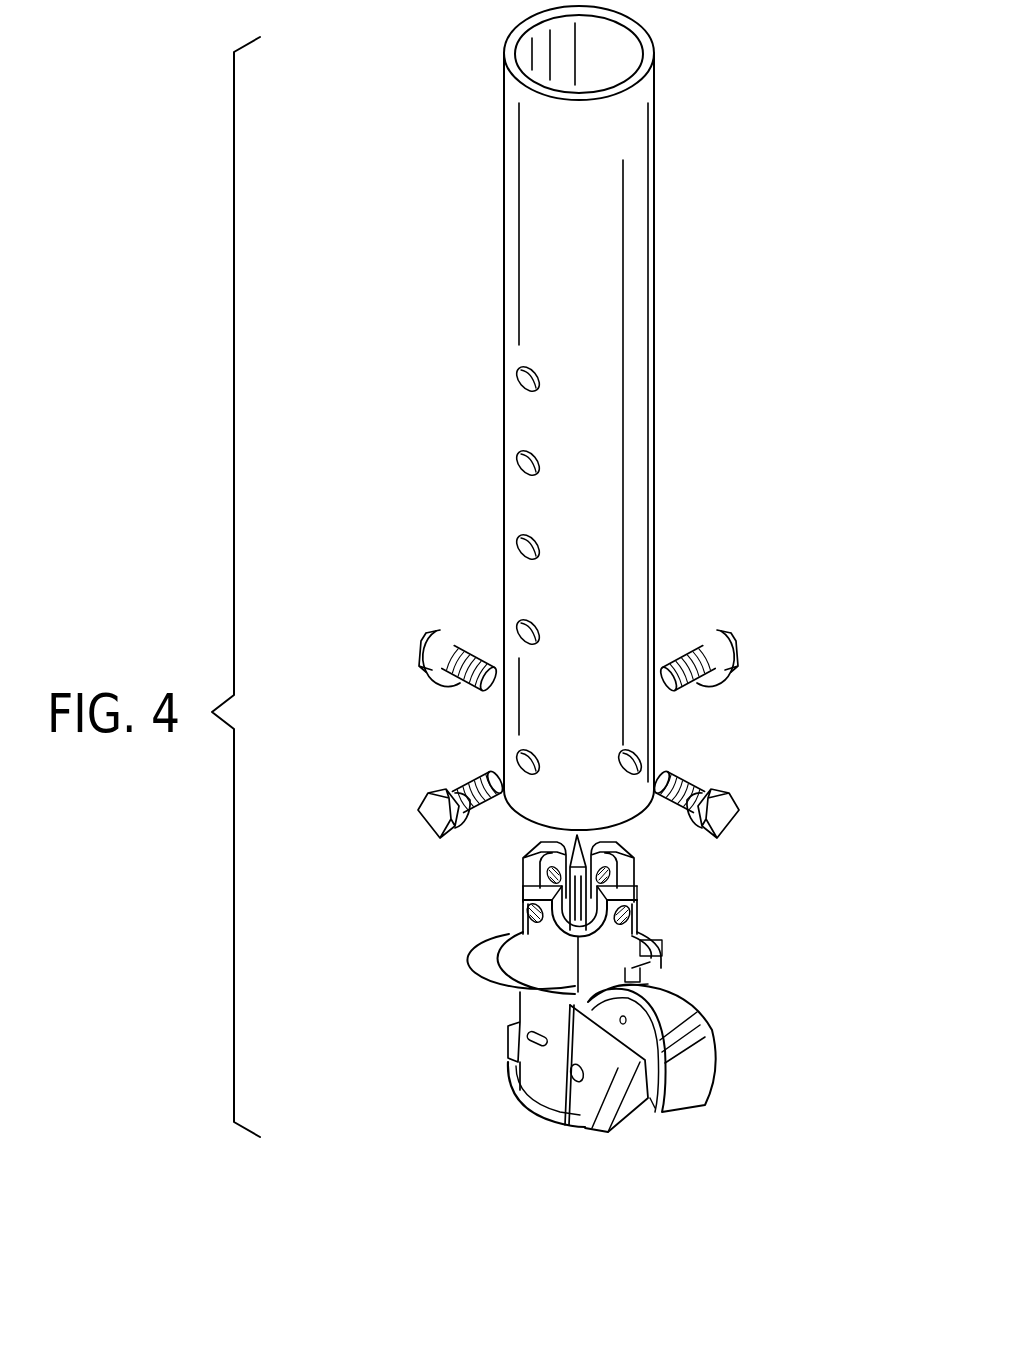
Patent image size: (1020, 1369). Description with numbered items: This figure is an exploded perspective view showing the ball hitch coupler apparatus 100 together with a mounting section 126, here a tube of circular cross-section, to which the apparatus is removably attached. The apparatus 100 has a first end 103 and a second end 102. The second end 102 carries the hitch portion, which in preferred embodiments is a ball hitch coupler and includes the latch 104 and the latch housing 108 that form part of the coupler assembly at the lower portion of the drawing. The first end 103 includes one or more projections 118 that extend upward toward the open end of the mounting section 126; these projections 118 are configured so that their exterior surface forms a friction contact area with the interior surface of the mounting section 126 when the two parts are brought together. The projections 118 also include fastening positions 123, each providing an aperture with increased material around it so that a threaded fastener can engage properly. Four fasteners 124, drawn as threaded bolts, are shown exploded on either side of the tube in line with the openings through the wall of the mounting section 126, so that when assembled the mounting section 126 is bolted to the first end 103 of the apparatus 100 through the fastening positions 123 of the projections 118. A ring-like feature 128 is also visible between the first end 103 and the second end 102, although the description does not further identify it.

The apparatus 100 is at (402, 929).
The second end 102 is at (527, 1000).
The first end 103 is at (537, 943).
The latch 104 is at (675, 996).
The latch housing 108 is at (602, 1122).
The projections 118 is at (624, 881).
The fastening positions 123 is at (580, 820).
The fastener 124 is at (468, 775).
The mounting section 126 is at (639, 409).
The ring 128 is at (515, 969).